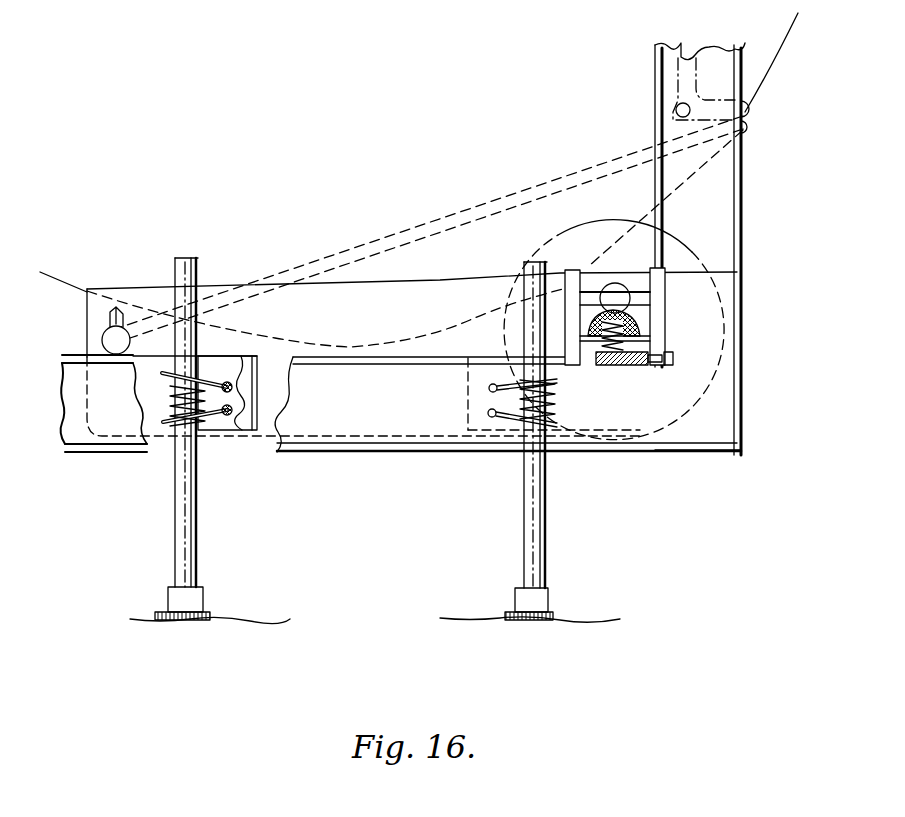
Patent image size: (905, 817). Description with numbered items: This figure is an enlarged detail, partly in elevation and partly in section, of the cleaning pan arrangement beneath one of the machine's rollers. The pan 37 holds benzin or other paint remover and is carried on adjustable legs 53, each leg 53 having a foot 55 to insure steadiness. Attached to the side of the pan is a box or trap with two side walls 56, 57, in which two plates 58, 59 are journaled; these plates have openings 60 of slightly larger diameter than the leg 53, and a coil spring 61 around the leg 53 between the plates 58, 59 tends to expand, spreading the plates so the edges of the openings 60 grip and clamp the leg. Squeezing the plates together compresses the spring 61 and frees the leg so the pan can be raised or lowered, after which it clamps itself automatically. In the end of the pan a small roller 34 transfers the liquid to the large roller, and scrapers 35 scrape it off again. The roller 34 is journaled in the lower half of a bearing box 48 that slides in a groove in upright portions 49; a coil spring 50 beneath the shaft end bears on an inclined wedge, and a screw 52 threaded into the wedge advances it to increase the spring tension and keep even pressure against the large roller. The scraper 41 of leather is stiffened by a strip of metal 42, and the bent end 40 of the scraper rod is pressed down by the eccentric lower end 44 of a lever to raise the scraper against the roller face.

The small roller 34 is at (647, 268).
The scraper 35 is at (116, 354).
The pan 37 is at (378, 436).
The end of rod 40 is at (685, 193).
The scraper 41 is at (102, 338).
The strip of metal 42 is at (133, 310).
The lower end of lever 44 is at (729, 112).
The lower half of box 48 is at (642, 317).
The upright portions 49 is at (583, 263).
The coil spring 50 is at (647, 337).
The screw 52 is at (670, 364).
The leg 53 is at (198, 522).
The foot 55 is at (203, 598).
The side wall 56 is at (213, 362).
The side wall 57 is at (257, 400).
The plate 58 is at (212, 382).
The plate 59 is at (226, 416).
The openings 60 is at (172, 427).
The coil spring 61 is at (170, 403).